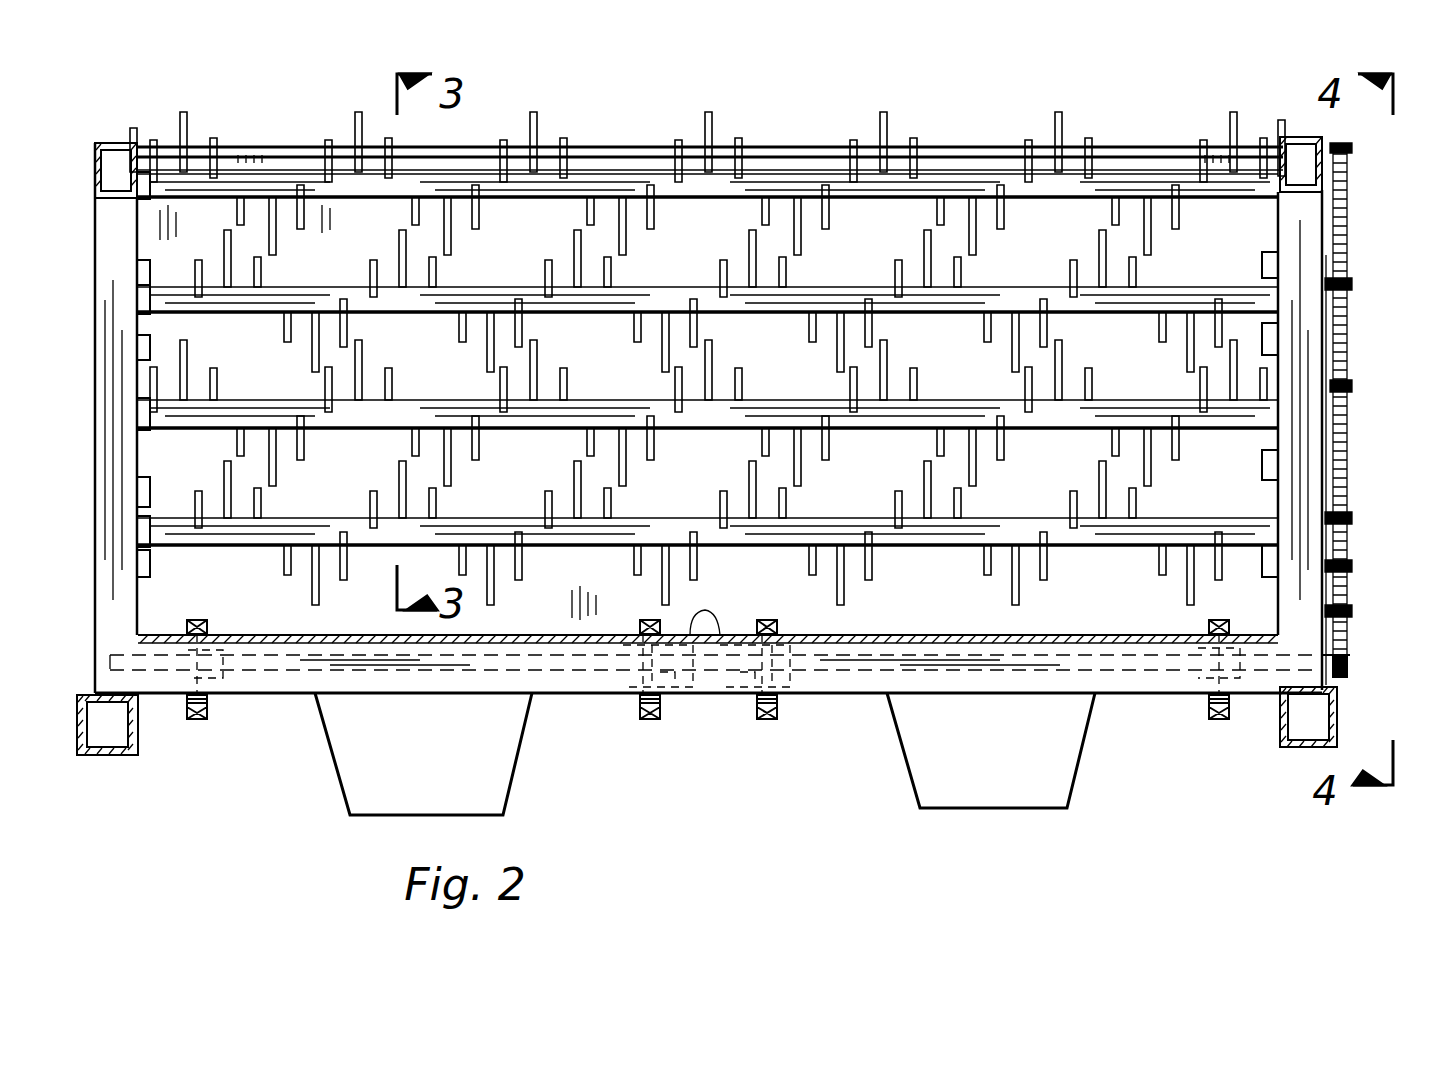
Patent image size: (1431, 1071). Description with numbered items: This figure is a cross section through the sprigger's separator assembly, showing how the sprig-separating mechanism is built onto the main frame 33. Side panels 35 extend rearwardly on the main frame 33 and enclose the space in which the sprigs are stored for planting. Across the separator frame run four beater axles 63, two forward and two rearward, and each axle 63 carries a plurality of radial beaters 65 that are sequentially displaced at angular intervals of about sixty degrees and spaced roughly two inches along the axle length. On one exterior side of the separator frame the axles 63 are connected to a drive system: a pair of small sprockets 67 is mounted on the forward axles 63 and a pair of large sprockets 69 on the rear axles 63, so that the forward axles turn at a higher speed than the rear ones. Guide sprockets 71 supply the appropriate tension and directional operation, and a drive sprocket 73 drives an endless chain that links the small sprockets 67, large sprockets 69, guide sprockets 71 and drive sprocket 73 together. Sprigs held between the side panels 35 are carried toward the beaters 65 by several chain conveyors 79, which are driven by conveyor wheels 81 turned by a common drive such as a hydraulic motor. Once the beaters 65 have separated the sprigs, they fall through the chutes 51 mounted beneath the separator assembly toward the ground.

The main frame 33 is at (120, 755).
The side panels 35 is at (110, 235).
The chutes 51 is at (485, 775).
The beater axles 63 is at (565, 200).
The radial beaters 65 is at (577, 143).
The small sprockets 67 is at (1352, 288).
The large sprockets 69 is at (1352, 150).
The guide sprockets 71 is at (1352, 568).
The drive sprocket 73 is at (1352, 612).
The chain conveyors 79 is at (1208, 623).
The conveyor wheels 81 is at (1352, 658).